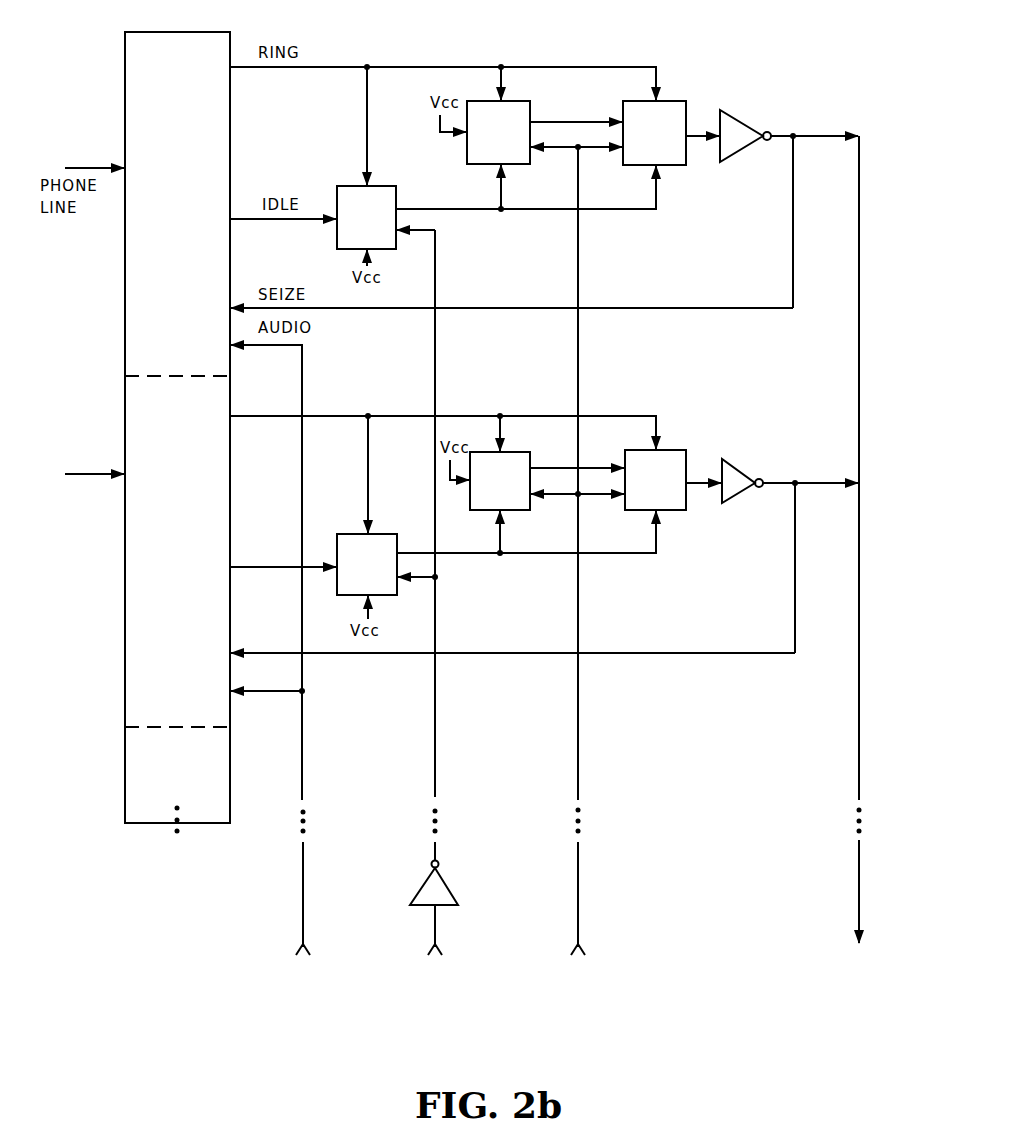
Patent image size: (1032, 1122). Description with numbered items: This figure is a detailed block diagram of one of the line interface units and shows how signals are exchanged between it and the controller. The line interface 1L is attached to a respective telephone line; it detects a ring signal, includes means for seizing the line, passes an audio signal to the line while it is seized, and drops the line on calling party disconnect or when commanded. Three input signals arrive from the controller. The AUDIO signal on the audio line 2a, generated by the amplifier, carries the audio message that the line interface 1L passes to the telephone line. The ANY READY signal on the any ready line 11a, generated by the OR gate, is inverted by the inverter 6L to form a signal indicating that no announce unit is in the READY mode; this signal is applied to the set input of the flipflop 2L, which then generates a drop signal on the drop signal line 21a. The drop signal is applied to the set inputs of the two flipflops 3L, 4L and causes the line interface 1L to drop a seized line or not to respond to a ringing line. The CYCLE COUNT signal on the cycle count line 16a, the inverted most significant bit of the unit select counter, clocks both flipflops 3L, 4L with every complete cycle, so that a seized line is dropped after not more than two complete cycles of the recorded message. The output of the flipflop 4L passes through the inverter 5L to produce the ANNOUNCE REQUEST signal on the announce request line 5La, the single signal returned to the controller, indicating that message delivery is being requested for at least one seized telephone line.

The line interface 1L is at (177, 433).
The flipflop 2L is at (366, 217).
The flipflop 3L is at (498, 132).
The flipflop 4L is at (654, 133).
The inverter 5L is at (745, 136).
The inverter 6L is at (462, 921).
The drop signal line 21a is at (530, 209).
The audio line 2a is at (303, 890).
The any ready line 11a is at (458, 615).
The cycle count line 16a is at (578, 894).
The announce request line 5La is at (859, 888).